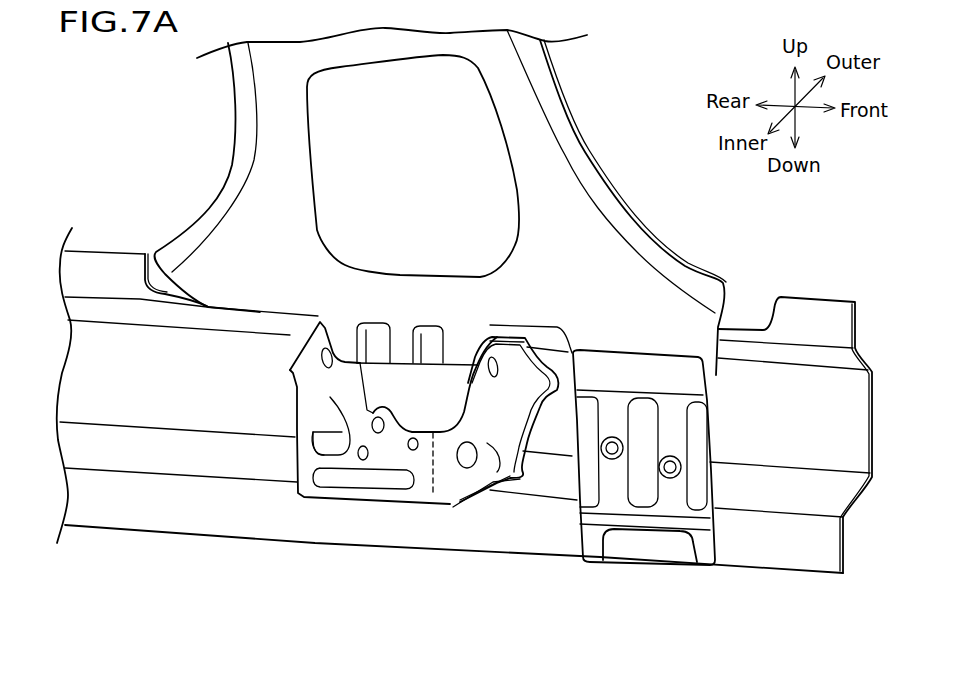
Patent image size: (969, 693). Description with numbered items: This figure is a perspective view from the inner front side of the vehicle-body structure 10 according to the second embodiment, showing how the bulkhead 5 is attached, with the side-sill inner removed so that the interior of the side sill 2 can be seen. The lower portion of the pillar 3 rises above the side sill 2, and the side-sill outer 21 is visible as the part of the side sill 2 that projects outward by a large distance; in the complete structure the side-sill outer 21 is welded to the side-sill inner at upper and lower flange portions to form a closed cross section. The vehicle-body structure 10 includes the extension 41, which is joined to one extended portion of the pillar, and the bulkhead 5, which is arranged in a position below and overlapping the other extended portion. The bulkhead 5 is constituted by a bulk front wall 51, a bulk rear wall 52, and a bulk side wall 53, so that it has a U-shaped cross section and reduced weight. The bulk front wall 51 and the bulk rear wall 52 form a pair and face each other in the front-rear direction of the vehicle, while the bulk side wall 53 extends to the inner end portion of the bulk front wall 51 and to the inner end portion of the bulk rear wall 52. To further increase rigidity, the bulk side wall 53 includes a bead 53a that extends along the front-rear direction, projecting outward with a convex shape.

The vehicle-body structure 10 is at (633, 107).
The center pillar 3 is at (216, 194).
The side sill 2 is at (475, 395).
The side-sill outer 21 is at (824, 298).
The extension 41 is at (720, 545).
The bulkhead 5 is at (465, 640).
The bulk front wall 51 is at (491, 467).
The bulk rear wall 52 is at (348, 441).
The bulk side wall 53 is at (401, 453).
The bead 53a is at (362, 477).